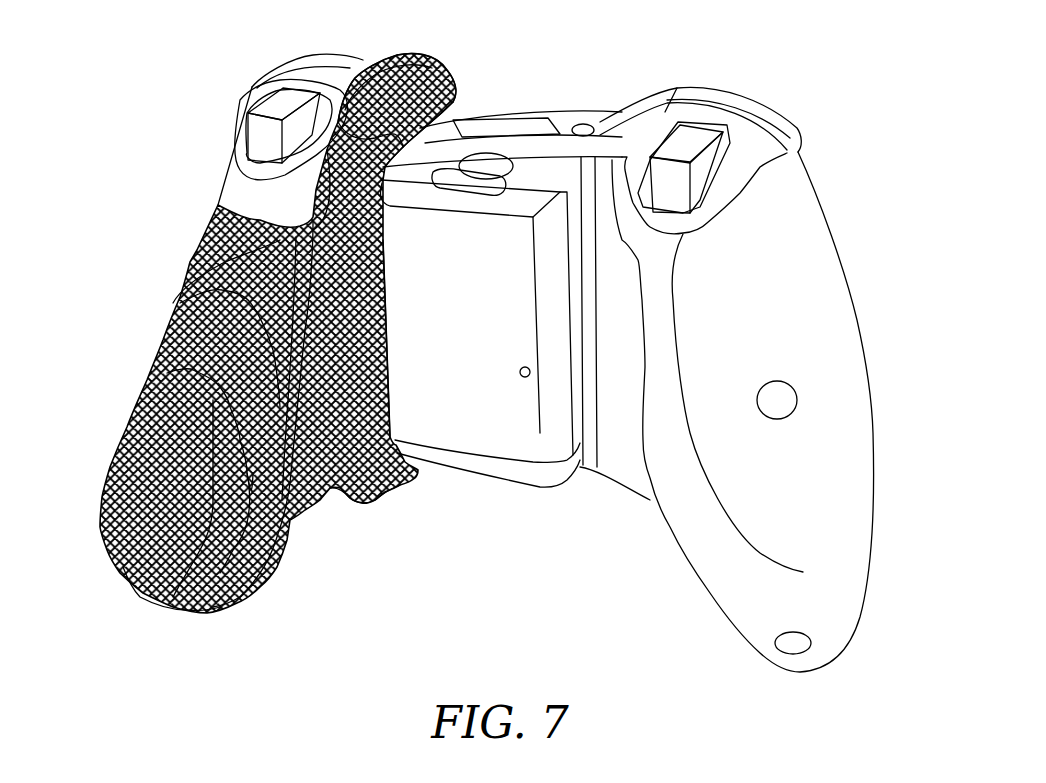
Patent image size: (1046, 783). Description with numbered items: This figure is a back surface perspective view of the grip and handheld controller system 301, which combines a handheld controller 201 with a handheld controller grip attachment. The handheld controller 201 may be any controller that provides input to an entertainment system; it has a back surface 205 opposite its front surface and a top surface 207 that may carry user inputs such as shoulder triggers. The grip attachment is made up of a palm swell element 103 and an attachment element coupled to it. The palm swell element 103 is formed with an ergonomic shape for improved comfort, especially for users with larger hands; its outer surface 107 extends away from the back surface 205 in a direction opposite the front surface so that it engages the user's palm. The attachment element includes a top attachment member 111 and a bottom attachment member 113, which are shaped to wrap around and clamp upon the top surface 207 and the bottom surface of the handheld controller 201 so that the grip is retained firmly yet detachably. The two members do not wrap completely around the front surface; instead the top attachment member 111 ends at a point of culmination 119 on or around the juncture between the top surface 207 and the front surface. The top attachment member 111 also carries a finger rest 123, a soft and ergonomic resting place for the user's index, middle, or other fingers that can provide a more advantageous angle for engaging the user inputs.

The palm swell element 103 is at (124, 356).
The outer surface 107 is at (100, 489).
The top attachment member 111 is at (452, 57).
The bottom attachment member 113 is at (365, 506).
The point of culmination 119 is at (453, 99).
The finger rest 123 is at (405, 60).
The handheld controller 201 is at (898, 349).
The back surface 205 is at (513, 448).
The top surface 207 is at (548, 126).
The grip and handheld controller system 301 is at (210, 134).